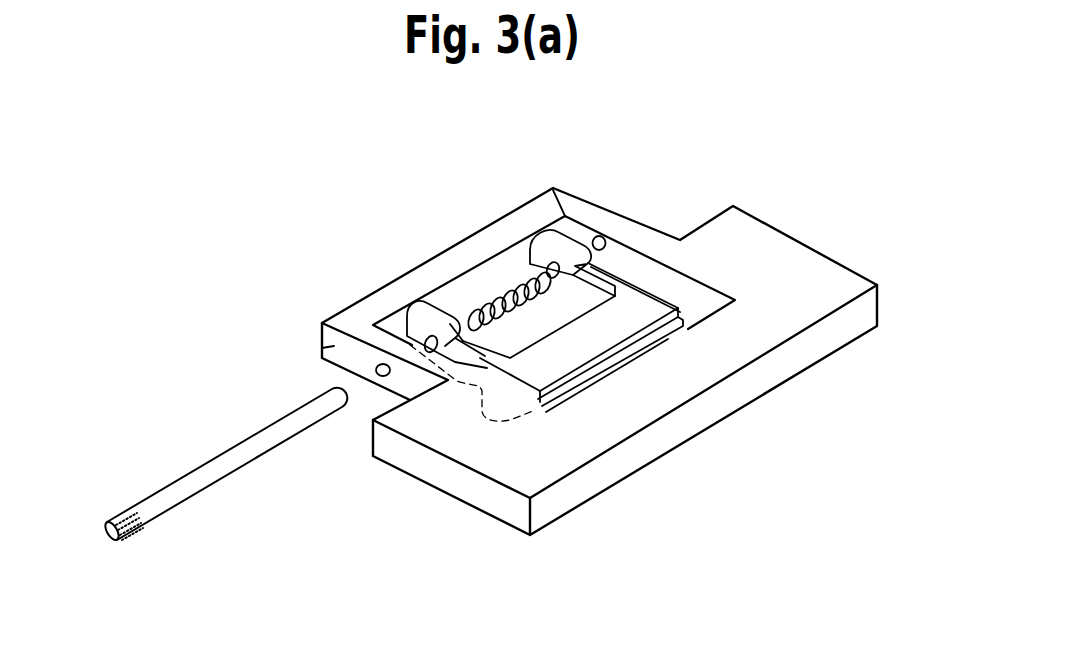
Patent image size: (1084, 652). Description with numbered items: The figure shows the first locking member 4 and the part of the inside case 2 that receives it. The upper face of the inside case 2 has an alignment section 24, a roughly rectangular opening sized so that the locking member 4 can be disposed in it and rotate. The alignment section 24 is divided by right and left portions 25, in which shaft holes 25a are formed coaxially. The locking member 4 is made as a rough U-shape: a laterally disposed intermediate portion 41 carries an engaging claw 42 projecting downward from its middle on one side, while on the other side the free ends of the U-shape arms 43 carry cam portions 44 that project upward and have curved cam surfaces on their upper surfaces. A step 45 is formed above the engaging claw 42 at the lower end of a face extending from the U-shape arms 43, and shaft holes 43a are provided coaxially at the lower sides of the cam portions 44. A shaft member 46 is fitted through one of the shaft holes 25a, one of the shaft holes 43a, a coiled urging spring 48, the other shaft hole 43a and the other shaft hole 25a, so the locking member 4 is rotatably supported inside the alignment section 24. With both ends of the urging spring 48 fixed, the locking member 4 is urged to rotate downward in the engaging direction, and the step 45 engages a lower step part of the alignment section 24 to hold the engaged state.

The inside case 2 is at (744, 222).
The alignment section 24 is at (677, 283).
The right and left portions 25 is at (578, 203).
The shaft holes 25a is at (599, 237).
The first locking member 4 is at (630, 320).
The U-shaped intermediate portion 41 is at (623, 363).
The engaging claw 42 is at (514, 417).
The U-shape arms 43 is at (478, 357).
The shaft holes 43a is at (505, 250).
The cam portions 44 is at (540, 232).
The step 45 is at (597, 347).
The shaft member 46 is at (277, 438).
The coiled urging spring 48 is at (473, 305).